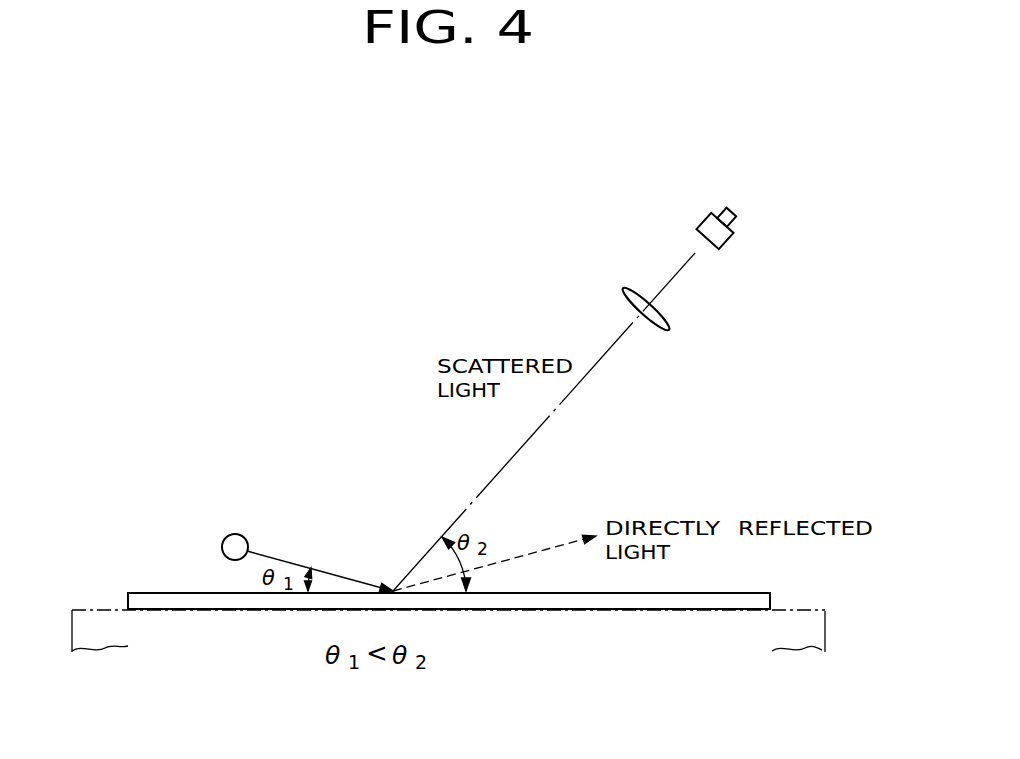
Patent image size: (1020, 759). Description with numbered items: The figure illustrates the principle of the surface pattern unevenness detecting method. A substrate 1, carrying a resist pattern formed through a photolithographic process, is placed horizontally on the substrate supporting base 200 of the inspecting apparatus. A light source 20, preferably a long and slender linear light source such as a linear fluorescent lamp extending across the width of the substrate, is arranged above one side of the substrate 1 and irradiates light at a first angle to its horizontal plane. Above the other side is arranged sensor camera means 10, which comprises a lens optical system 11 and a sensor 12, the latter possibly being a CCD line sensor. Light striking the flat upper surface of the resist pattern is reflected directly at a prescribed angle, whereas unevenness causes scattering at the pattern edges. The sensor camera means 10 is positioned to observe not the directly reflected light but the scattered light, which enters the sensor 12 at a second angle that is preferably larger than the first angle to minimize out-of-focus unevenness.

The substrate 1 is at (212, 604).
The sensor camera means 10 is at (615, 185).
The lens optical system 11 is at (634, 300).
The sensor 12 is at (706, 225).
The light source 20 is at (222, 547).
The substrate supporting base 200 is at (90, 627).